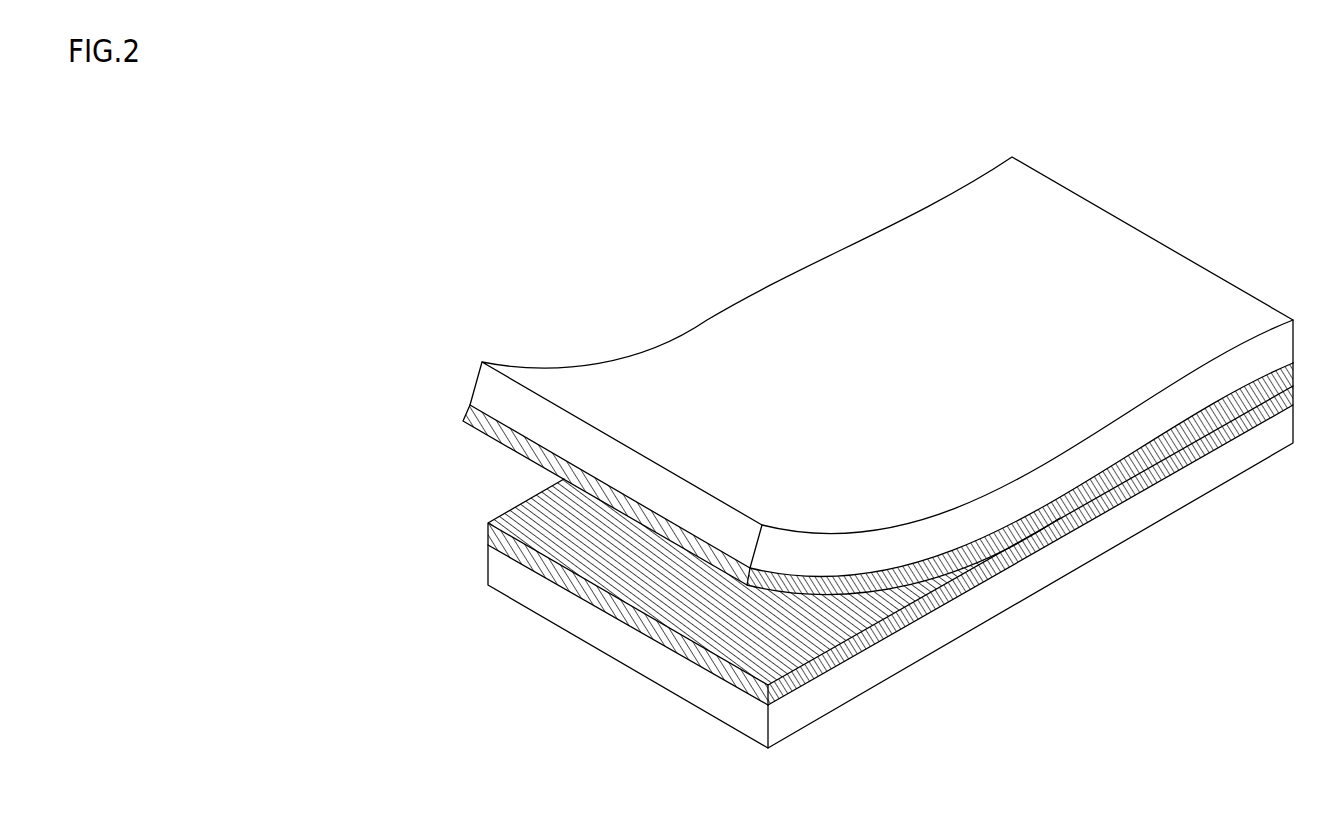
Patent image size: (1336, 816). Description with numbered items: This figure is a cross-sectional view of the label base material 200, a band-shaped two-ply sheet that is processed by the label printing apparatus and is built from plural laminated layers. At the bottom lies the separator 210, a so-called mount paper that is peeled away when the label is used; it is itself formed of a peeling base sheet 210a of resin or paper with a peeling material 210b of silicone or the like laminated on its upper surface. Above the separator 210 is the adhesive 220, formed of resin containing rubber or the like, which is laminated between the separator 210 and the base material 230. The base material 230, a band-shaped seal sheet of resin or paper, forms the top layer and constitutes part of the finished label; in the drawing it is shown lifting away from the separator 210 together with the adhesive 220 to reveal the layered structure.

The label base material 200 is at (673, 282).
The base material 230 is at (481, 389).
The adhesive 220 is at (490, 428).
The separator 210 is at (292, 517).
The peeling material 210b is at (497, 535).
The peeling base sheet 210a is at (497, 568).